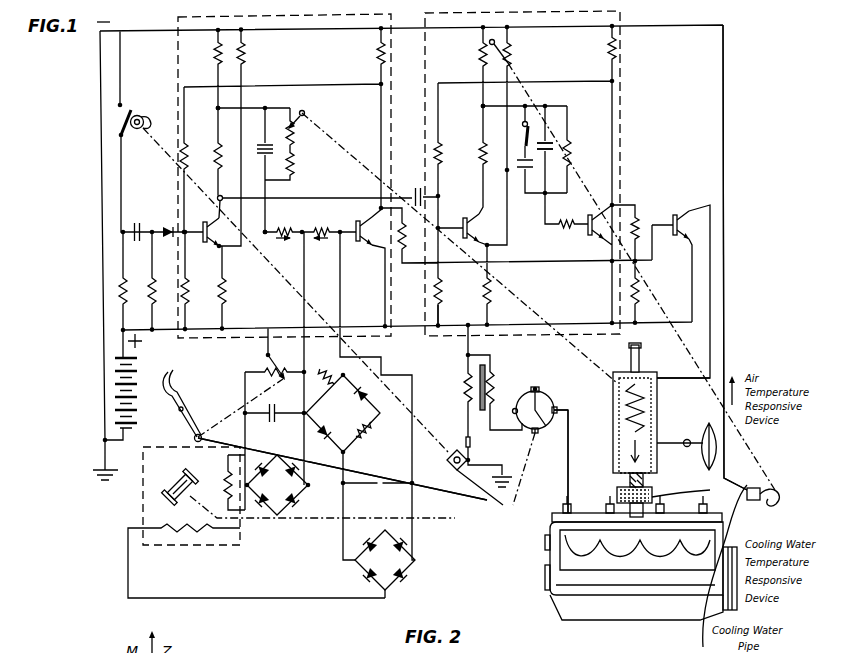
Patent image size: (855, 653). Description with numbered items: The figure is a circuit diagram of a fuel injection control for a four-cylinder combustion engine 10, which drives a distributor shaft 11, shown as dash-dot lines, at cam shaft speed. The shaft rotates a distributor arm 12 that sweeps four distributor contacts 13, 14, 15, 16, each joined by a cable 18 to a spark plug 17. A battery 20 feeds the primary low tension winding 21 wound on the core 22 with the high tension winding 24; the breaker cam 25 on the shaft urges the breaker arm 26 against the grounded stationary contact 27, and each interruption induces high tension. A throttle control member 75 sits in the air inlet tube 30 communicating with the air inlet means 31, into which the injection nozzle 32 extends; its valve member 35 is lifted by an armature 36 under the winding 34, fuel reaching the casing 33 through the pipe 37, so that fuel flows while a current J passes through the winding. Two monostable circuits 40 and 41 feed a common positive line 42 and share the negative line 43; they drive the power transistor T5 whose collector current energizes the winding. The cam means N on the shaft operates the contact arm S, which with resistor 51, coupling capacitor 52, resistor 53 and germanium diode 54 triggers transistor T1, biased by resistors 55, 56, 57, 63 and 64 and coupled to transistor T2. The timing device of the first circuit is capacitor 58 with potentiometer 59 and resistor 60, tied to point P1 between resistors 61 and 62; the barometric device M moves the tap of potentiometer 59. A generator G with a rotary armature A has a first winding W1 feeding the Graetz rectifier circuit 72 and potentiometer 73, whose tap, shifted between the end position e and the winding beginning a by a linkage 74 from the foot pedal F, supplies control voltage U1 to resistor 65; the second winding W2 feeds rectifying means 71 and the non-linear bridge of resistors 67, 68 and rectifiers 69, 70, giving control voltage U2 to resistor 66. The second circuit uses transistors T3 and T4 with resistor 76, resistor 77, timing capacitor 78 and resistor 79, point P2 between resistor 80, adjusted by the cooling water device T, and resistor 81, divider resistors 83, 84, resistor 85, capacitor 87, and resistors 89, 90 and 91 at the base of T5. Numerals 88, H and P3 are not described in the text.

The combustion engine 10 is at (701, 519).
The distributor shaft 11 is at (528, 496).
The distributor arm 12 is at (547, 410).
The distributor contact 13 is at (558, 410).
The distributor contact 14 is at (538, 433).
The distributor contact 15 is at (513, 408).
The distributor contact 16 is at (539, 389).
The spark plug 17 is at (571, 506).
The cable 18 is at (570, 476).
The battery 20 is at (137, 383).
The primary low tension winding 21 is at (465, 385).
The core 22 is at (491, 357).
The high tension winding 24 is at (495, 379).
The breaker cam 25 is at (455, 472).
The breaker arm 26 is at (471, 443).
The stationary contact 27 is at (470, 498).
The air inlet tube 30 is at (645, 511).
The air inlet means 31 is at (674, 492).
The injection nozzle 32 is at (645, 481).
The casing 33 is at (652, 402).
The winding 34 is at (658, 395).
The valve member 35 is at (647, 461).
The armature 36 is at (653, 438).
The pipe 37 is at (630, 352).
The monostable circuit 40 is at (327, 28).
The monostable circuit 41 is at (522, 173).
The common line 42 is at (508, 308).
The line 43 is at (697, 27).
The resistor 51 is at (121, 291).
The coupling capacitor 52 is at (137, 221).
The resistor 53 is at (153, 281).
The germanium diode 54 is at (168, 226).
The resistor 55 is at (187, 300).
The resistor 56 is at (186, 150).
The resistor 57 is at (383, 50).
The capacitor 58 is at (275, 149).
The potentiometer 59 is at (305, 114).
The resistor 60 is at (293, 168).
The resistor 61 is at (216, 52).
The resistor 62 is at (216, 160).
The resistor 63 is at (243, 46).
The resistor 64 is at (225, 291).
The resistor 65 is at (285, 231).
The resistor 66 is at (320, 231).
The resistor 67 is at (326, 392).
The resistor 68 is at (363, 434).
The rectifier 69 is at (328, 442).
The rectifier 70 is at (368, 401).
The rectifying means 71 is at (410, 565).
The Graetz rectifier circuit 72 is at (301, 499).
The potentiometer 73 is at (272, 370).
The linkage 74 is at (266, 411).
The throttle control member 75 is at (636, 548).
The resistor 76 is at (440, 152).
The resistor 77 is at (558, 227).
The capacitor 78 is at (556, 144).
The resistor 79 is at (570, 150).
The resistor 80 is at (480, 45).
The resistor 81 is at (481, 165).
The resistor 83 is at (490, 290).
The resistor 84 is at (509, 48).
The resistor 85 is at (441, 291).
The capacitor 87 is at (416, 186).
The resistor 88 is at (615, 46).
The resistor 89 is at (639, 208).
The resistor 90 is at (404, 255).
The resistor 91 is at (638, 290).
The contact arm S is at (120, 122).
The cam means N is at (144, 115).
The foot pedal F is at (175, 374).
The generator G is at (143, 500).
The rotary armature A is at (185, 478).
The first winding W1 is at (226, 487).
The second winding W2 is at (190, 531).
The barometric device M is at (716, 456).
The cooling water temperature responsive means T is at (777, 491).
The current J is at (736, 390).
The contact H is at (517, 132).
The point P1 is at (216, 108).
The point P2 is at (481, 106).
The node P3 is at (264, 232).
The transistor T1 is at (210, 246).
The transistor T2 is at (366, 246).
The transistor T3 is at (466, 241).
The transistor T4 is at (590, 237).
The power transistor T5 is at (675, 237).
The control voltage U1 is at (285, 247).
The control voltage U2 is at (325, 247).
The end position e is at (247, 364).
The beginning of the potentiometer winding a is at (295, 364).